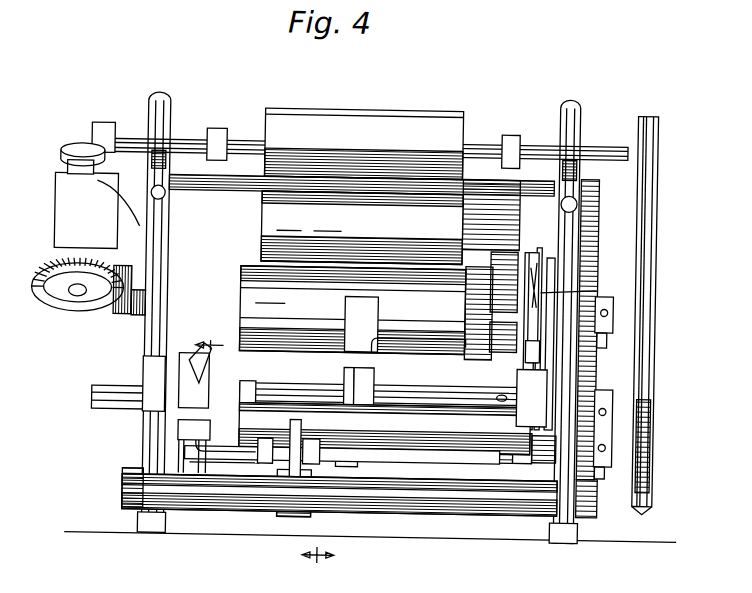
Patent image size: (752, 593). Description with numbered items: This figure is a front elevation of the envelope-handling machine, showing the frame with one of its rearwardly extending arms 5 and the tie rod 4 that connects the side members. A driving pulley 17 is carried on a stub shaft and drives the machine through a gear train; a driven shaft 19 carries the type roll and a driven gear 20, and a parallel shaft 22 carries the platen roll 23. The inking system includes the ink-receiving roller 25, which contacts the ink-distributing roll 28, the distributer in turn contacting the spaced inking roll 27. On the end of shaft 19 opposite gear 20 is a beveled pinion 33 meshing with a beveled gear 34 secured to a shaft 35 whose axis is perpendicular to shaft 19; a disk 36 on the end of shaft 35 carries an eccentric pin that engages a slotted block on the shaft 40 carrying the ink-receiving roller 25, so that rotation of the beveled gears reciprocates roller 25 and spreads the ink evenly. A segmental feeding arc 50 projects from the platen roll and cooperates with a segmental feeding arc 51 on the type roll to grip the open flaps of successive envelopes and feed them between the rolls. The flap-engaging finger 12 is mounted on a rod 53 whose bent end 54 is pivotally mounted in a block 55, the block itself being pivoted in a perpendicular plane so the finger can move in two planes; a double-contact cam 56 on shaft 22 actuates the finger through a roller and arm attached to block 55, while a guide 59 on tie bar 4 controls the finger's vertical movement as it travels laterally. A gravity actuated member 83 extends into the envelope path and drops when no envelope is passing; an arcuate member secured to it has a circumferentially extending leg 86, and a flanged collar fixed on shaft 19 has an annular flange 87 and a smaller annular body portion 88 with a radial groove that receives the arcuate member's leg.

The tie rod 4 is at (243, 507).
The arm 5 is at (264, 452).
The flap-engaging finger 12 is at (344, 393).
The driving pulley 17 is at (654, 205).
The driven shaft 19 is at (137, 321).
The driven gear 20 is at (599, 291).
The shaft 22 is at (93, 400).
The platen roll 23 is at (385, 429).
The ink-receiving roller 25 is at (353, 114).
The inking roll 27 is at (366, 275).
The ink-distributing roll 28 is at (236, 188).
The beveled pinion 33 is at (115, 312).
The beveled gear 34 is at (104, 127).
The shaft 35 is at (65, 173).
The disk 36 is at (74, 148).
The shaft 40 is at (528, 289).
The segmental feeding arc 50 is at (375, 392).
The segmental feeding arc 51 is at (378, 319).
The rod 53 is at (404, 461).
The bent end 54 is at (197, 446).
The block 55 is at (192, 465).
The double-contact cam 56 is at (180, 377).
The guide 59 is at (285, 509).
The gravity actuated member 83 is at (419, 338).
The circumferentially extending leg 86 is at (528, 354).
The annular flange 87 is at (586, 254).
The annular body portion 88 is at (596, 287).